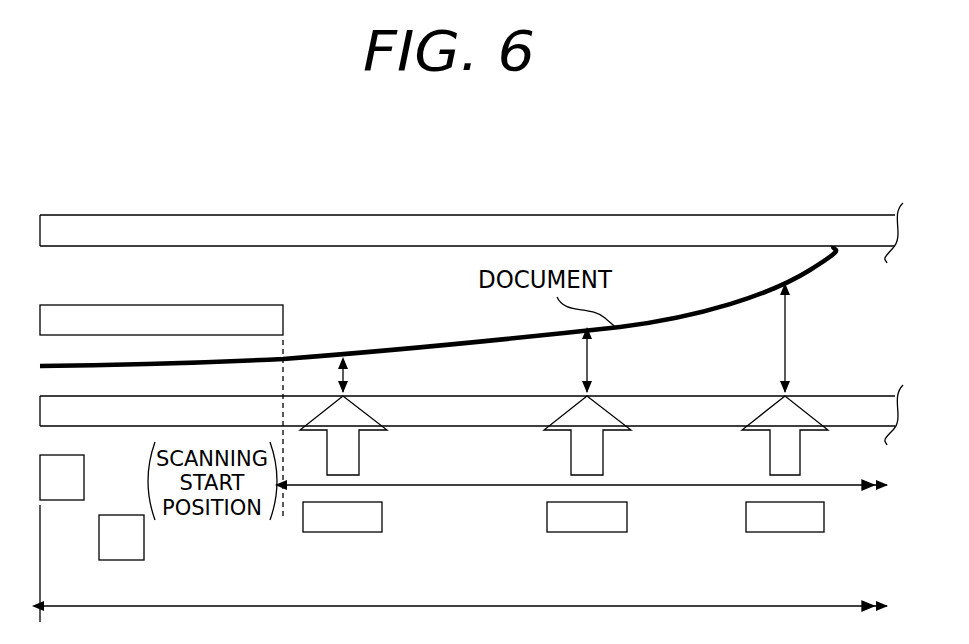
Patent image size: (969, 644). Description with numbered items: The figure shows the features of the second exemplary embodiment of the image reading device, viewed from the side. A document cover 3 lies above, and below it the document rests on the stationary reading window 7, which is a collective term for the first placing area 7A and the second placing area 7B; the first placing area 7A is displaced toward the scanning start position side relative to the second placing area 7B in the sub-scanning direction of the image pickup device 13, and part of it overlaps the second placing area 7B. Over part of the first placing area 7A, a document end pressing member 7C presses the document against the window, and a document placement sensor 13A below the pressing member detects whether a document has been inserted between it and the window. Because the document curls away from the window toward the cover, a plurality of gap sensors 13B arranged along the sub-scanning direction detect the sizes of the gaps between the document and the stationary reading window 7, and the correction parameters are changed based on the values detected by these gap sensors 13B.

The document cover 3 is at (707, 215).
The stationary reading window 7 is at (833, 390).
The first placing area 7A is at (463, 563).
The second placing area 7B is at (586, 473).
The document end pressing member 7C is at (284, 318).
The image pickup device 13 is at (84, 478).
The document placement sensor 13A is at (144, 552).
The gap sensors 13B is at (343, 533).